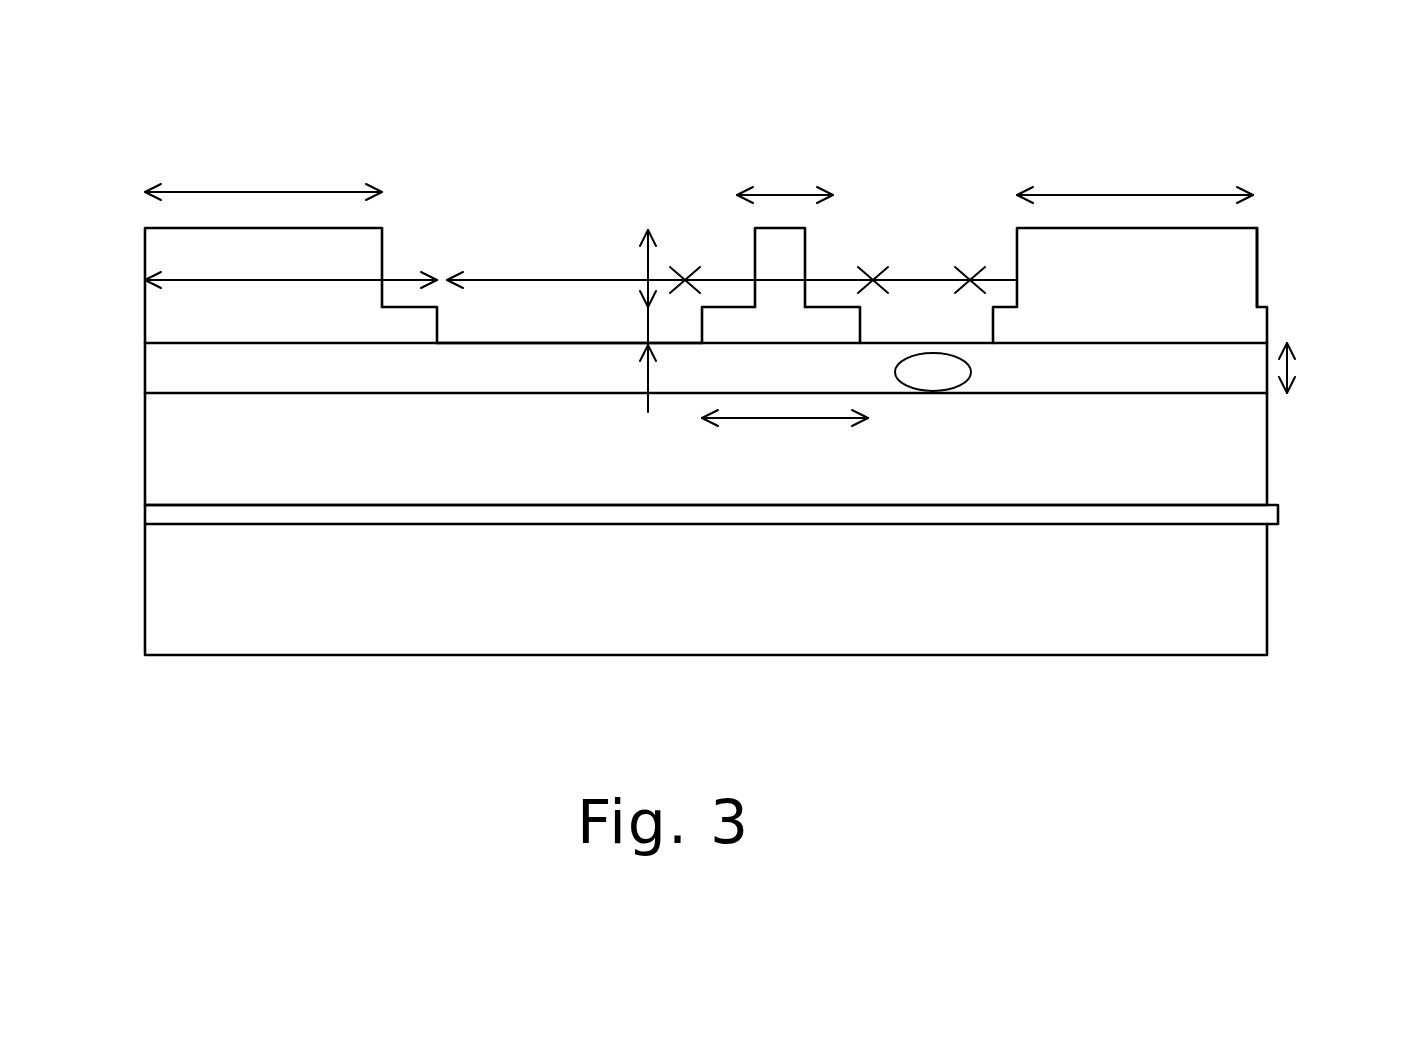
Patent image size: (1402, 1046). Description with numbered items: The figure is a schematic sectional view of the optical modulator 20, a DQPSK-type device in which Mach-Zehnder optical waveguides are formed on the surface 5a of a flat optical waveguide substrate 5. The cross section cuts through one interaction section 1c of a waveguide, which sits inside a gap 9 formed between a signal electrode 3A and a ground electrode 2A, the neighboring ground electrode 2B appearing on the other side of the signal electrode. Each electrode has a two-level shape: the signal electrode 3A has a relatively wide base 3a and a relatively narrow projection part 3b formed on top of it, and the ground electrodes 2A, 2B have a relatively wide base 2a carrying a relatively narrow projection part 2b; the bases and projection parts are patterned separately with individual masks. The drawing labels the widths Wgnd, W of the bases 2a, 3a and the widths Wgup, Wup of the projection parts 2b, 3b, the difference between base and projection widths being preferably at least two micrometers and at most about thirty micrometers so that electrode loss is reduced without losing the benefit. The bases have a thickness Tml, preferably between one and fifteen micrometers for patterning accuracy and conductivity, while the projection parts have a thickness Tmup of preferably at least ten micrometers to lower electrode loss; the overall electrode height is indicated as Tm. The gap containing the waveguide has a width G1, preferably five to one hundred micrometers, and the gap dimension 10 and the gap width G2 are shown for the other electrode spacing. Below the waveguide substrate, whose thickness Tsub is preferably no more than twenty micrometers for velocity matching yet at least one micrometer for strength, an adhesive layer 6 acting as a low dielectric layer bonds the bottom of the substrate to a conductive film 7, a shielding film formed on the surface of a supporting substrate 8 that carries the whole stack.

The optical modulator 20 is at (1224, 165).
The ground electrode 2A is at (1262, 225).
The ground electrode 2B is at (395, 232).
The base of ground electrode 2a is at (410, 330).
The projection part of ground electrode 2b is at (282, 245).
The signal electrode 3A is at (740, 242).
The base of signal electrode 3a is at (795, 345).
The projection part of signal electrode 3b is at (805, 248).
The optical waveguide substrate 5 is at (163, 372).
The surface of optical waveguide substrate 5a is at (482, 335).
The adhesive layer 6 is at (163, 452).
The conductive film 7 is at (160, 513).
The supporting substrate 8 is at (168, 588).
The gap 9 is at (980, 215).
The gap between signal conductor and ground conductor 10 is at (662, 175).
The interaction section 1c is at (950, 393).
The width of ground electrode projection part Wgup is at (699, 157).
The width of ground electrode base Wgnd is at (291, 303).
The width of signal electrode projection part Wup is at (785, 162).
The width of signal electrode base W is at (785, 448).
The width of gap G1 is at (920, 283).
The gap width G2 is at (545, 283).
The thickness of projection parts Tmup is at (648, 268).
The thickness of bases Tml is at (645, 325).
The conductor thickness Tm is at (1287, 267).
The thickness of optical waveguide substrate Tsub is at (1293, 362).